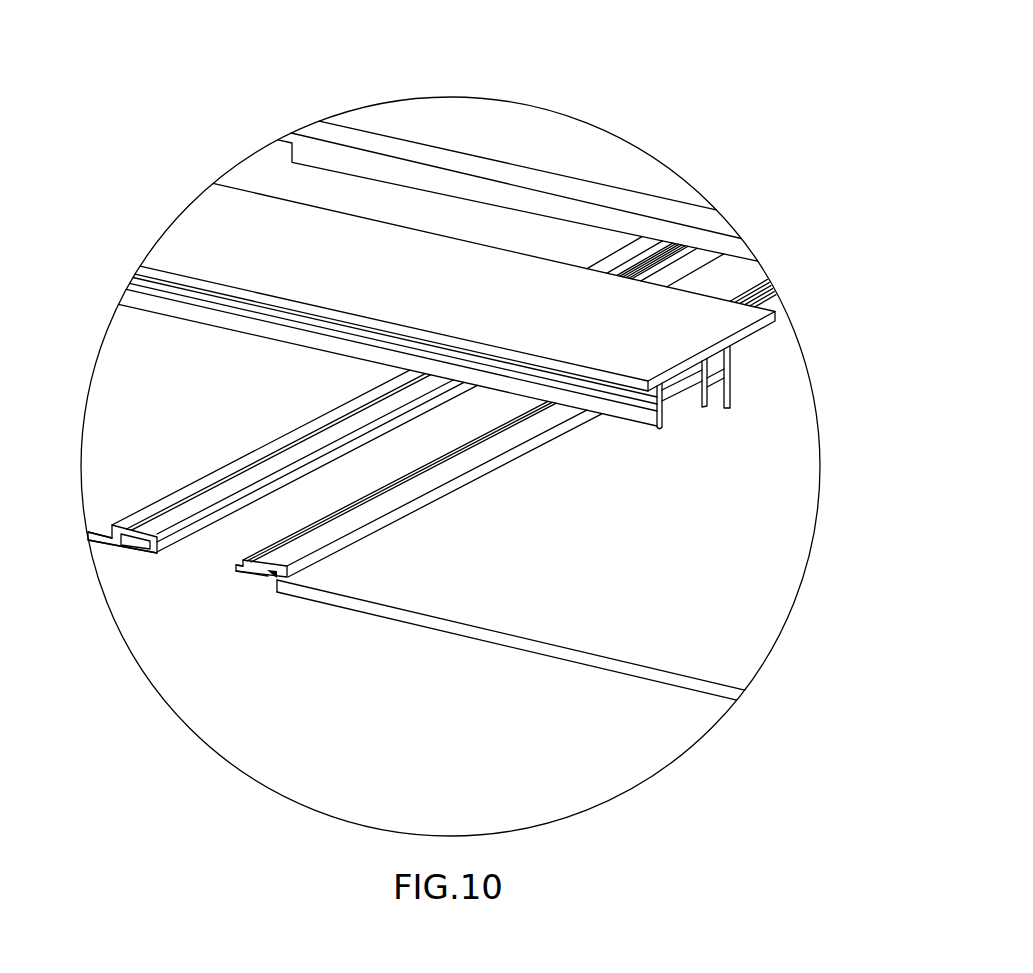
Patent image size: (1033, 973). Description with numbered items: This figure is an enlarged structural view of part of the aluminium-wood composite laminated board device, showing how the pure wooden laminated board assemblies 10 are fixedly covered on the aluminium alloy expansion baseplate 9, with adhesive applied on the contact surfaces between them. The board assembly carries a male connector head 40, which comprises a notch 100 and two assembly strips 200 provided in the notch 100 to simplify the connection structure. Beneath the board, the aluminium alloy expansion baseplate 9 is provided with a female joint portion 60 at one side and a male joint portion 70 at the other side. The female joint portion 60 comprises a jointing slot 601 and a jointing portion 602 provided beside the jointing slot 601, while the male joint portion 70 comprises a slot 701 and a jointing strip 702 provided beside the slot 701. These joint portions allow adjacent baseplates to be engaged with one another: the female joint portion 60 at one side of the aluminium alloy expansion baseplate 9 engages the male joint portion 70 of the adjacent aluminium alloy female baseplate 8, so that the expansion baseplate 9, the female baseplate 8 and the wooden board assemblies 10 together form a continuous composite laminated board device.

The pure wooden laminated board assembly 10 is at (517, 128).
The male connector head 40 is at (231, 237).
The aluminium alloy expansion baseplate 9 is at (139, 412).
The female joint portion 60 is at (244, 527).
The jointing slot 601 is at (127, 533).
The jointing portion 602 is at (157, 563).
The male joint portion 70 is at (331, 596).
The slot 701 is at (270, 583).
The jointing strip 702 is at (250, 572).
The notch 100 is at (733, 403).
The assembly strip 200 is at (712, 385).
The aluminium alloy female baseplate 8 is at (618, 638).